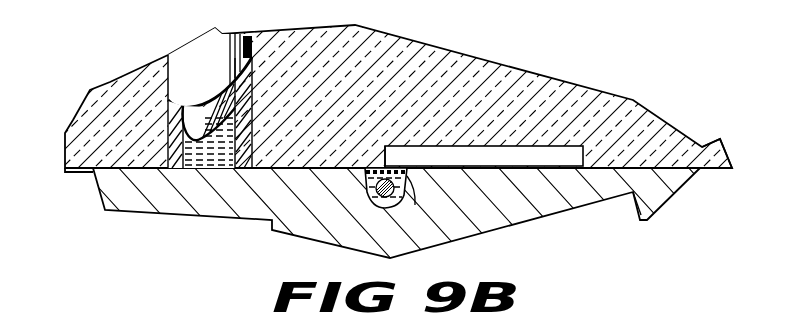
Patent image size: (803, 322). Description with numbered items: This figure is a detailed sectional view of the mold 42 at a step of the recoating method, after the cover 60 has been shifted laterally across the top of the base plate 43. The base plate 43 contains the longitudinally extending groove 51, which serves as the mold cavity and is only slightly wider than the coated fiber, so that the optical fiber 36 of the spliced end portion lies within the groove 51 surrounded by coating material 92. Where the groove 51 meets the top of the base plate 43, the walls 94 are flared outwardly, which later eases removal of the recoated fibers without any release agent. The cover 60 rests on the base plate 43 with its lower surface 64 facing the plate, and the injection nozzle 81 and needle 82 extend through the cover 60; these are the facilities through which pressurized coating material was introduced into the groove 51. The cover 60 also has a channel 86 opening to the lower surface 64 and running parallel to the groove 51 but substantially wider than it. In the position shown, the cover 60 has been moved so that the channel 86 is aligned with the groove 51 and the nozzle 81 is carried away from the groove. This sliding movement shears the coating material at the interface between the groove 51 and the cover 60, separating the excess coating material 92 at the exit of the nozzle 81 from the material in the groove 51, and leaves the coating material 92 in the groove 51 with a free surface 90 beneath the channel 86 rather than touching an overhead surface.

The cover 60 is at (640, 103).
The base plate 43 is at (204, 212).
The lower surface 64 is at (86, 172).
The injection nozzle 81 is at (196, 84).
The needle 82 is at (204, 133).
The channel 86 is at (490, 144).
The groove 51 is at (362, 168).
The optical fiber 36 is at (374, 198).
The coating material 92 is at (378, 207).
The walls 94 is at (416, 204).
The free surface 90 is at (407, 168).
The mold 42 is at (708, 174).